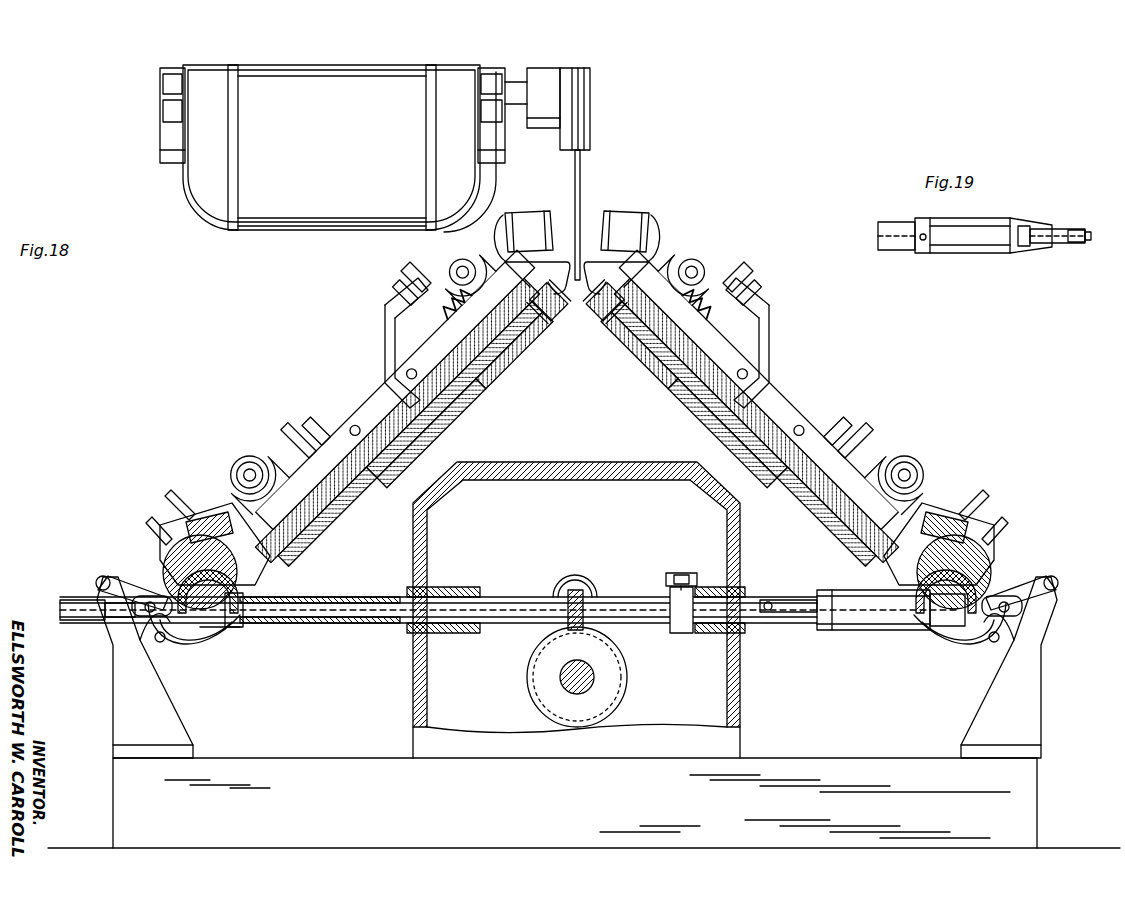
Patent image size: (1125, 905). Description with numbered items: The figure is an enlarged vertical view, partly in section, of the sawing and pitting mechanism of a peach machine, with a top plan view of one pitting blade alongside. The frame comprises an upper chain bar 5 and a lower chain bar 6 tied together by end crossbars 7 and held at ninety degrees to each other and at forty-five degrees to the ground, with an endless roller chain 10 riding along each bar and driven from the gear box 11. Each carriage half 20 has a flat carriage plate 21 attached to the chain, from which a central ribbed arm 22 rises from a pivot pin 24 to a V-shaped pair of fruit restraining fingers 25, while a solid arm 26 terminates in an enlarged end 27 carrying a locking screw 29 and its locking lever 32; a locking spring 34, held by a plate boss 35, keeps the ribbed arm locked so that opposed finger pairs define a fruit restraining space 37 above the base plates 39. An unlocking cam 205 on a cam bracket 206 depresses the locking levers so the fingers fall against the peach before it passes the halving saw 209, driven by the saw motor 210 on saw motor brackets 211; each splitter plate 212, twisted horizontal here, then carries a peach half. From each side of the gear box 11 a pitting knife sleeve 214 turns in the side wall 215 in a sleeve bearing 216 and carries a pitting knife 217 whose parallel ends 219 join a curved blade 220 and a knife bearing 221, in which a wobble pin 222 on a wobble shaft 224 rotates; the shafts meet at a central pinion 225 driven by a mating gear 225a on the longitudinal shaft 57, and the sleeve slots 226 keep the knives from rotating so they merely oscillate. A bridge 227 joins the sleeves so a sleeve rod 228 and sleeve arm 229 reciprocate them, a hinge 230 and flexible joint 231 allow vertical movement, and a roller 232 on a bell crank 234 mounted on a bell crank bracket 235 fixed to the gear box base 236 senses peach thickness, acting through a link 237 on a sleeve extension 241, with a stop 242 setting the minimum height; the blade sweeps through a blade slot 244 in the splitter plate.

In FIG. 18, the upper chain bar 5 is at (458, 382).
In FIG. 18, the lower chain bar 6 is at (385, 505).
In FIG. 18, the end crossbar 7 is at (470, 392).
In FIG. 18, the endless roller chain 10 is at (522, 305).
In FIG. 18, the gear box 11 is at (576, 597).
In FIG. 18, the carriage half 20 is at (470, 270).
In FIG. 18, the carriage plate 21 is at (540, 356).
In FIG. 18, the central ribbed arm 22 is at (418, 275).
In FIG. 18, the pivot pin 24 is at (356, 428).
In FIG. 18, the fruit restraining fingers 25 is at (945, 512).
In FIG. 18, the solid arm 26 is at (395, 488).
In FIG. 18, the enlarged end 27 is at (252, 456).
In FIG. 18, the locking screw 29 is at (462, 262).
In FIG. 18, the locking lever 32 is at (402, 280).
In FIG. 18, the locking spring 34 is at (450, 305).
In FIG. 18, the plate boss 35 is at (505, 340).
In FIG. 18, the fruit restraining space 37 is at (178, 560).
In FIG. 18, the base plate 39 is at (577, 292).
In FIG. 18, the longitudinal shaft 57 is at (558, 680).
In FIG. 18, the unlocking cam 205 is at (385, 312).
In FIG. 18, the cam bracket 206 is at (384, 348).
In FIG. 18, the halving saw 209 is at (581, 183).
In FIG. 18, the saw motor 210 is at (339, 148).
In FIG. 18, the saw motor bracket 211 is at (165, 150).
In FIG. 18, the splitter plate 212 is at (95, 582).
In FIG. 18, the pitting knife sleeve 214 is at (365, 620).
In FIG. 19, the pitting knife sleeve 214 is at (958, 258).
In FIG. 18, the side wall 215 is at (412, 682).
In FIG. 18, the sleeve bearing 216 is at (448, 633).
In FIG. 18, the pitting knife 217 is at (140, 600).
In FIG. 19, the pitting knife 217 is at (1070, 246).
In FIG. 18, the parallel ends 219 is at (180, 648).
In FIG. 18, the curved blade 220 is at (165, 548).
In FIG. 19, the curved blade 220 is at (1038, 255).
In FIG. 18, the knife bearing 221 is at (222, 640).
In FIG. 18, the wobble pin 222 is at (232, 630).
In FIG. 19, the wobble pin 222 is at (1088, 240).
In FIG. 18, the wobble shaft 224 is at (368, 598).
In FIG. 18, the central pinion 225 is at (560, 590).
In FIG. 18, the mating gear 225a is at (628, 676).
In FIG. 18, the sleeve slot 226 is at (236, 632).
In FIG. 19, the sleeve slot 226 is at (1032, 230).
In FIG. 18, the bridge 227 is at (578, 590).
In FIG. 18, the sleeve rod 228 is at (684, 572).
In FIG. 18, the sleeve arm 229 is at (668, 580).
In FIG. 18, the hinge 230 is at (760, 605).
In FIG. 18, the flexible joint 231 is at (380, 628).
In FIG. 18, the roller 232 is at (172, 490).
In FIG. 18, the bell crank 234 is at (150, 520).
In FIG. 18, the bell crank bracket 235 is at (112, 680).
In FIG. 18, the gear box base 236 is at (584, 803).
In FIG. 18, the link 237 is at (140, 625).
In FIG. 18, the sleeve extension 241 is at (215, 640).
In FIG. 18, the stop 242 is at (130, 607).
In FIG. 18, the blade slot 244 is at (100, 590).